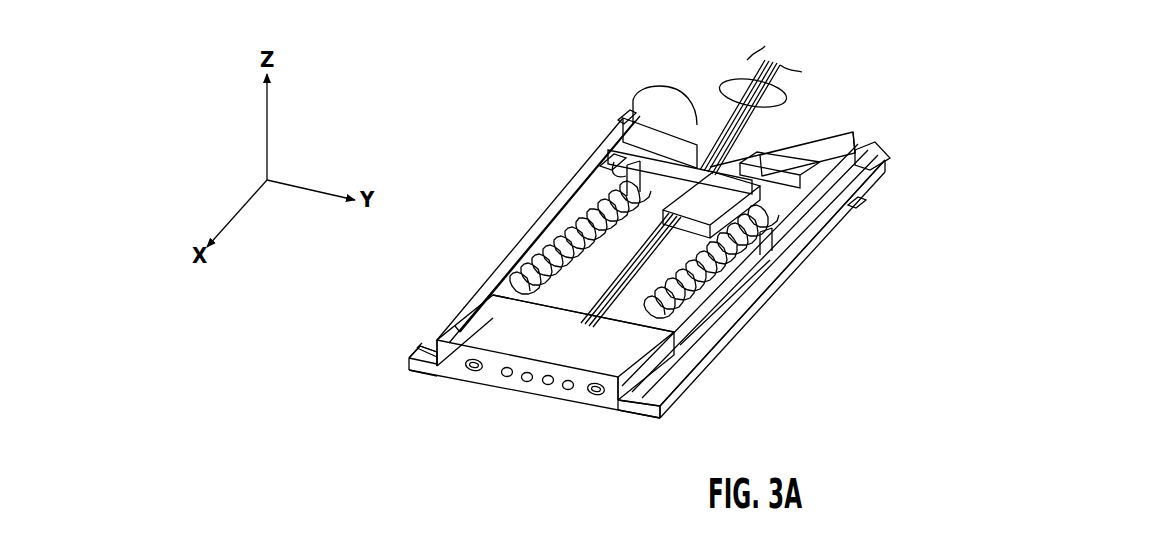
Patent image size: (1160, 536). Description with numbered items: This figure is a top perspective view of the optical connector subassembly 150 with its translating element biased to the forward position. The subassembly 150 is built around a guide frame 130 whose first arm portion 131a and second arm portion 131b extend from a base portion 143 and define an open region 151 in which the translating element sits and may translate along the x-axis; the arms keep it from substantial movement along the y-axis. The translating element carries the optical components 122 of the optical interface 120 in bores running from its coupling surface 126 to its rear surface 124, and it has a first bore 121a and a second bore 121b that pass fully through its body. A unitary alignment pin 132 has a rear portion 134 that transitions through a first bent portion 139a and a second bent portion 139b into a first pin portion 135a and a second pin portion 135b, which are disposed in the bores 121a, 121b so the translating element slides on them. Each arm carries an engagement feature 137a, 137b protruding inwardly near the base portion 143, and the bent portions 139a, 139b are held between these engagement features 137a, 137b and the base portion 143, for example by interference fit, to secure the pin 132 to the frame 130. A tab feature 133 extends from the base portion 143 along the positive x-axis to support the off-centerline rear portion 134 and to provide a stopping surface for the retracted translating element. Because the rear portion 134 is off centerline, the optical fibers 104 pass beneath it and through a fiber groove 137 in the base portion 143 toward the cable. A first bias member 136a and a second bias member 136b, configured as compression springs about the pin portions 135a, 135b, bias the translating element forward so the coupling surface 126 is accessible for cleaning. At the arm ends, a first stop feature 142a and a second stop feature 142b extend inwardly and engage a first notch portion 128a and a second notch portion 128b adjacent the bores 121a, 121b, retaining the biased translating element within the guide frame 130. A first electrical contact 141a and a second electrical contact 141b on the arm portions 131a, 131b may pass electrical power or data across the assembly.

The optical fibers 104 is at (776, 105).
The optical interface 120 is at (534, 398).
The first bore 121a is at (593, 400).
The second bore 121b is at (473, 373).
The optical components 122 is at (527, 372).
The rear surface 124 is at (690, 362).
The coupling surface 126 is at (509, 378).
The first notch portion 128a is at (658, 398).
The second notch portion 128b is at (452, 336).
The guide frame 130 is at (492, 262).
The first arm portion 131a is at (628, 420).
The second arm portion 131b is at (438, 380).
The unitary alignment pin 132 is at (850, 155).
The tab feature 133 is at (713, 180).
The rear portion 134 is at (856, 133).
The first pin portion 135a is at (745, 252).
The second pin portion 135b is at (560, 260).
The first bias member 136a is at (765, 243).
The second bias member 136b is at (592, 208).
The fiber groove 137 is at (774, 130).
The engagement feature 137a is at (855, 210).
The engagement feature 137b is at (613, 163).
The first bent portion 139a is at (880, 170).
The second bent portion 139b is at (637, 160).
The first electrical contact 141a is at (678, 372).
The second electrical contact 141b is at (428, 347).
The first stop feature 142a is at (617, 397).
The second stop feature 142b is at (437, 350).
The base portion 143 is at (660, 105).
The optical connector subassembly 150 is at (540, 95).
The open region 151 is at (733, 280).